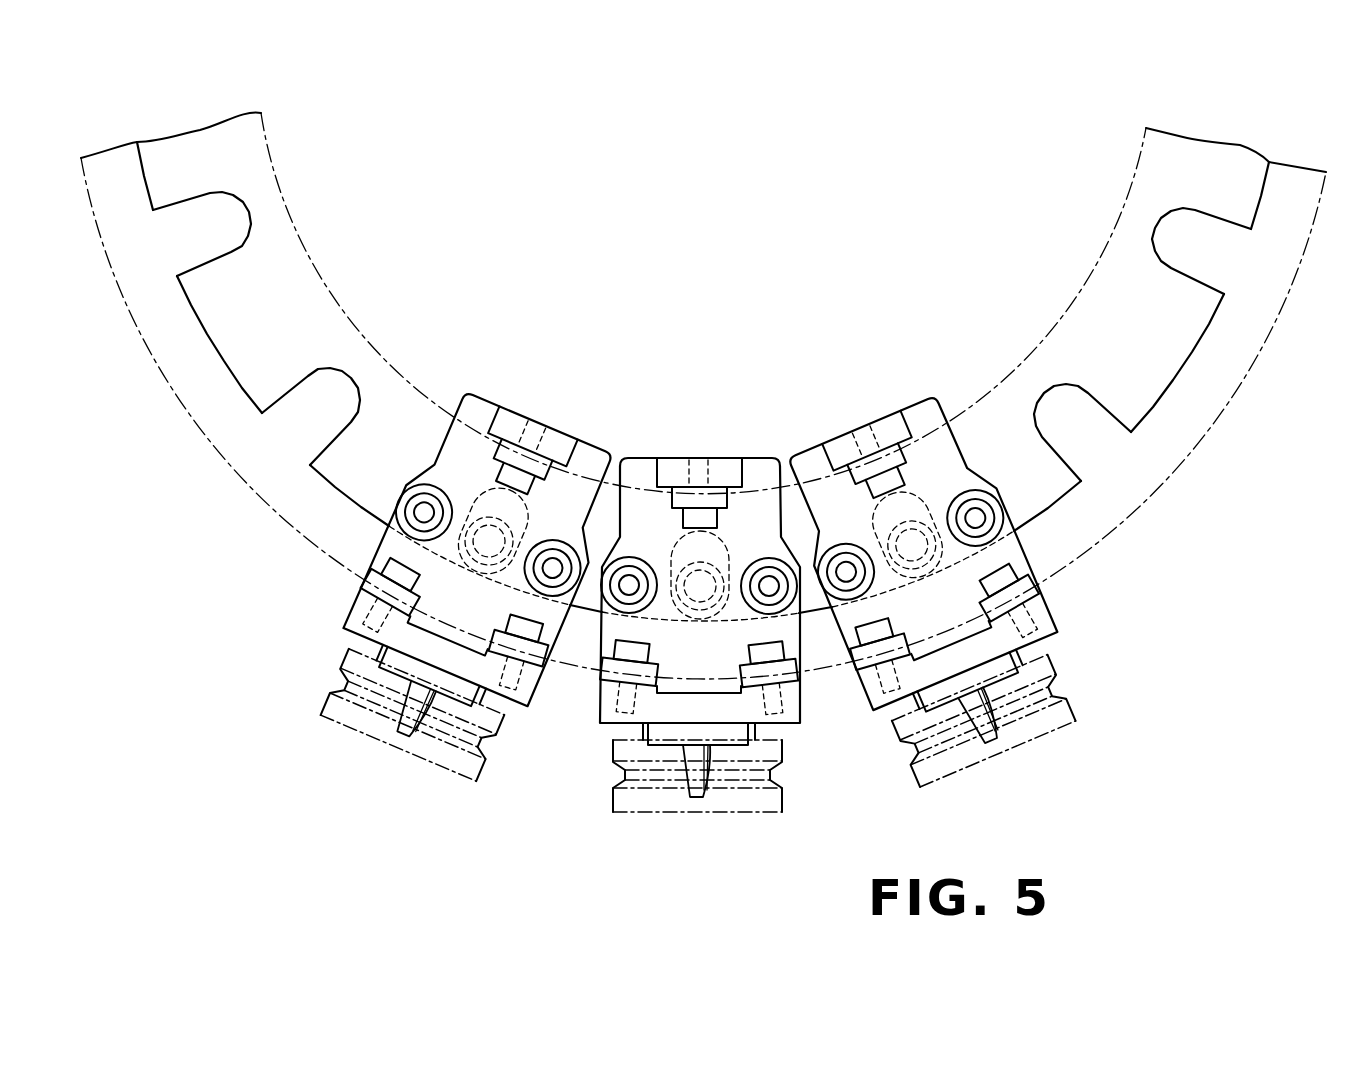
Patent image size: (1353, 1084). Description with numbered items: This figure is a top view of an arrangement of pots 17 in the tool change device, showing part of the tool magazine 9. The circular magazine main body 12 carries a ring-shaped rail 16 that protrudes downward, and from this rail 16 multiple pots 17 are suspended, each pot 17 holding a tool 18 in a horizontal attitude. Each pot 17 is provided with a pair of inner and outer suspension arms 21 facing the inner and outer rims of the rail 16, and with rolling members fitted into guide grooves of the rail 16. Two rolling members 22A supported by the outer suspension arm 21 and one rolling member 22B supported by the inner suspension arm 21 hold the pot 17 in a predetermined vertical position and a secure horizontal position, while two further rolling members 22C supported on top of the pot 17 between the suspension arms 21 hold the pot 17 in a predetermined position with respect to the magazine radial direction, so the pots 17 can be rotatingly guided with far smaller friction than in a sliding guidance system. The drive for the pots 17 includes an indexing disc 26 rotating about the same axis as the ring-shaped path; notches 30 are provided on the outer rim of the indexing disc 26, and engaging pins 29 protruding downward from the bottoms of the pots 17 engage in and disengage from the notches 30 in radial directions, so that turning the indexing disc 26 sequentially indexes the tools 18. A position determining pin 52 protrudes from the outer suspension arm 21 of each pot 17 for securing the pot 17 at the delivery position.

The tool magazine 9 is at (1184, 458).
The magazine main body 12 is at (1243, 378).
The ring-shaped rail 16 is at (1036, 348).
The indexing disc 26 is at (233, 362).
The notches 30 is at (307, 393).
The pot 17 is at (466, 397).
The suspension arms 21 is at (520, 417).
The rolling members 22A is at (368, 573).
The rolling member 22B is at (510, 443).
The rolling members 22C is at (408, 497).
The engaging pin 29 is at (482, 514).
The tool 18 is at (448, 767).
The position determining pin 52 is at (402, 738).